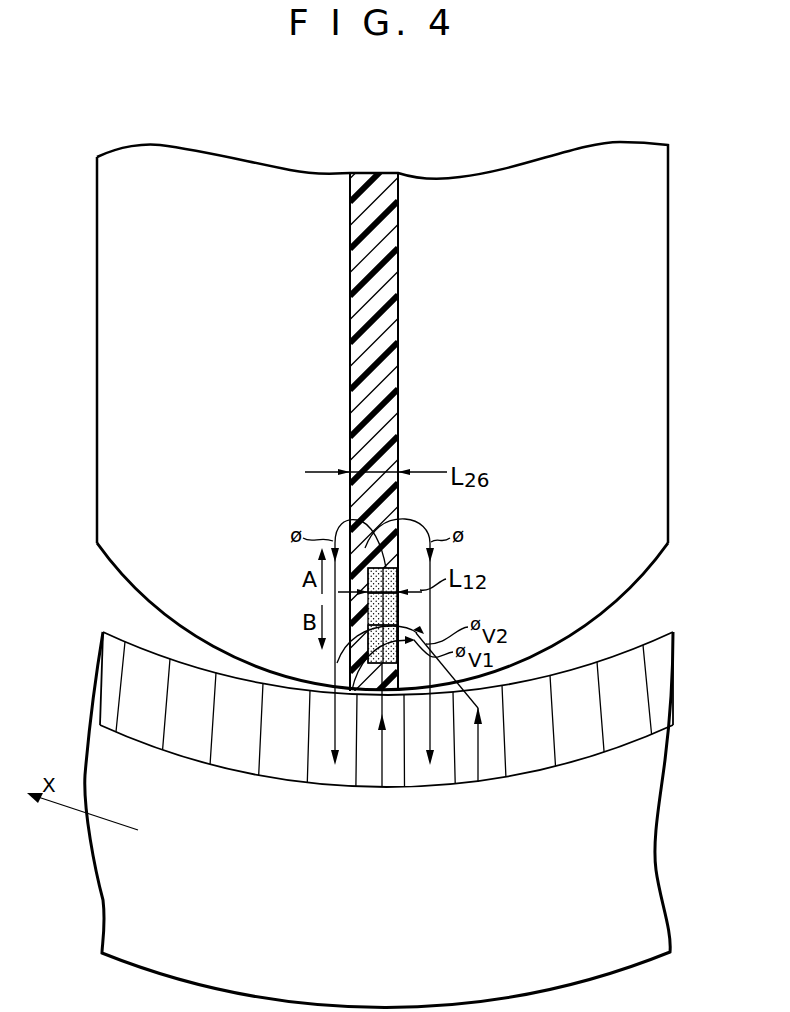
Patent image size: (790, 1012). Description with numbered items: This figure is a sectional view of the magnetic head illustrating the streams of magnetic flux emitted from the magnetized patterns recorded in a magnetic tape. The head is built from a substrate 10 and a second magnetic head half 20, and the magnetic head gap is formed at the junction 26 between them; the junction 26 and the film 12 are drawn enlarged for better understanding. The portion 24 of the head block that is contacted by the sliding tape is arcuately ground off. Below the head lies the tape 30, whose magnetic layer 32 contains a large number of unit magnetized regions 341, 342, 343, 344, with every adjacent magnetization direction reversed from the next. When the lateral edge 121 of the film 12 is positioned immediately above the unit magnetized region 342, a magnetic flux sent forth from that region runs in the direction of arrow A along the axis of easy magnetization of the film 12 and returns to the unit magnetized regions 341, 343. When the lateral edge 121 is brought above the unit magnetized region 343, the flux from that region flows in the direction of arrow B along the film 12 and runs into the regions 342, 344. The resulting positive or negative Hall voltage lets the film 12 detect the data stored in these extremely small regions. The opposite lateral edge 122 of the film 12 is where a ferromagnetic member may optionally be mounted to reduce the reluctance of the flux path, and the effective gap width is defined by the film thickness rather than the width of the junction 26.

The substrate 10 is at (655, 423).
The second magnetic head half 20 is at (118, 434).
The portion contacted by sliding recording medium 24 is at (622, 601).
The junction 26 is at (387, 418).
The film 12 is at (392, 612).
The lateral edge of the film 121 is at (364, 672).
The opposite lateral edge of the film 122 is at (373, 557).
The rotor 30 is at (666, 869).
The magnetic layer 32 is at (665, 687).
The unit magnetized region 341 is at (320, 773).
The unit magnetized region 342 is at (368, 773).
The unit magnetized region 343 is at (422, 773).
The unit magnetized region 344 is at (473, 773).